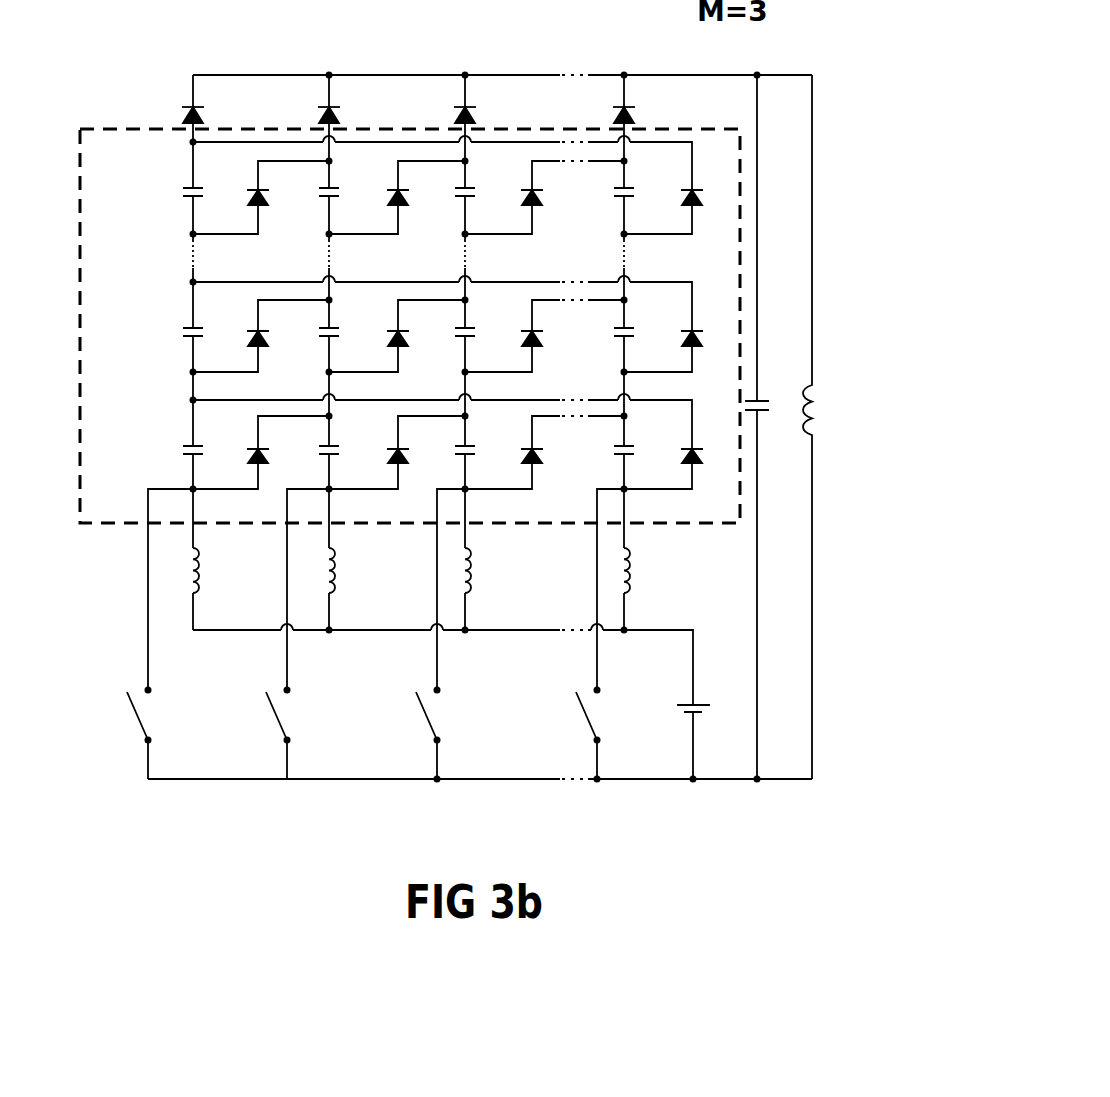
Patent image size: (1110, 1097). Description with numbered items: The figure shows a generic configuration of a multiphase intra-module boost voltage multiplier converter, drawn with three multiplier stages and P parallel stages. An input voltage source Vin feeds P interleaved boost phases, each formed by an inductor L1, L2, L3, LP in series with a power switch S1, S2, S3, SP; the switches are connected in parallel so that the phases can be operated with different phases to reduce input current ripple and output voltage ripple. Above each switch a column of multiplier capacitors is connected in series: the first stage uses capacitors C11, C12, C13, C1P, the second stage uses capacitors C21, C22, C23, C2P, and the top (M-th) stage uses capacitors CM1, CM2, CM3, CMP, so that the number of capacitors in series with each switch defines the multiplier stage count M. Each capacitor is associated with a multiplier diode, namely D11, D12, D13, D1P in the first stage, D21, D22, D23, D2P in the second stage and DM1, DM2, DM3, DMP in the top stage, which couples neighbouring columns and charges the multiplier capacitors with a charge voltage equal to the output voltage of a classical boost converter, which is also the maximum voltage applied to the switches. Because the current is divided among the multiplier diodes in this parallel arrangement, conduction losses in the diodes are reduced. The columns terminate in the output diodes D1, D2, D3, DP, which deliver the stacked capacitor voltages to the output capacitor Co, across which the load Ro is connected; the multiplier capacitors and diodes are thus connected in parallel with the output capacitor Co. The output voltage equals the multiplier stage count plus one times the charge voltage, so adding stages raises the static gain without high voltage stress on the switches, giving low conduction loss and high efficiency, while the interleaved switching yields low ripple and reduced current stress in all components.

The output diode D1 is at (176, 118).
The output diode D2 is at (311, 118).
The output diode D3 is at (447, 118).
The output diode DP is at (604, 118).
The multiplier capacitor CM1 is at (175, 211).
The multiplier diode DM1 is at (263, 196).
The multiplier capacitor CM2 is at (311, 211).
The multiplier diode DM2 is at (399, 196).
The multiplier capacitor CM3 is at (446, 211).
The multiplier diode DM3 is at (546, 196).
The multiplier capacitor CMP is at (603, 211).
The multiplier diode DMP is at (663, 209).
The multiplier capacitor C21 is at (175, 351).
The multiplier diode D21 is at (263, 335).
The multiplier capacitor C22 is at (311, 351).
The multiplier diode D22 is at (399, 335).
The multiplier capacitor C23 is at (446, 351).
The multiplier diode D23 is at (546, 335).
The multiplier capacitor C2P is at (603, 351).
The multiplier diode D2P is at (663, 349).
The multiplier capacitor C11 is at (175, 468).
The multiplier diode D11 is at (263, 451).
The multiplier capacitor C12 is at (311, 468).
The multiplier diode D12 is at (399, 451).
The multiplier capacitor C13 is at (446, 468).
The multiplier diode D13 is at (546, 451).
The multiplier capacitor C1P is at (603, 468).
The multiplier diode D1P is at (663, 466).
The inductor L1 is at (212, 570).
The inductor L2 is at (348, 570).
The inductor L3 is at (485, 570).
The inductor LP is at (643, 570).
The switch S1 is at (148, 634).
The switch S2 is at (284, 634).
The switch S3 is at (427, 634).
The switch SP is at (587, 634).
The input voltage Vin is at (677, 729).
The output capacitor Co is at (763, 427).
The load resistor Ro is at (823, 427).